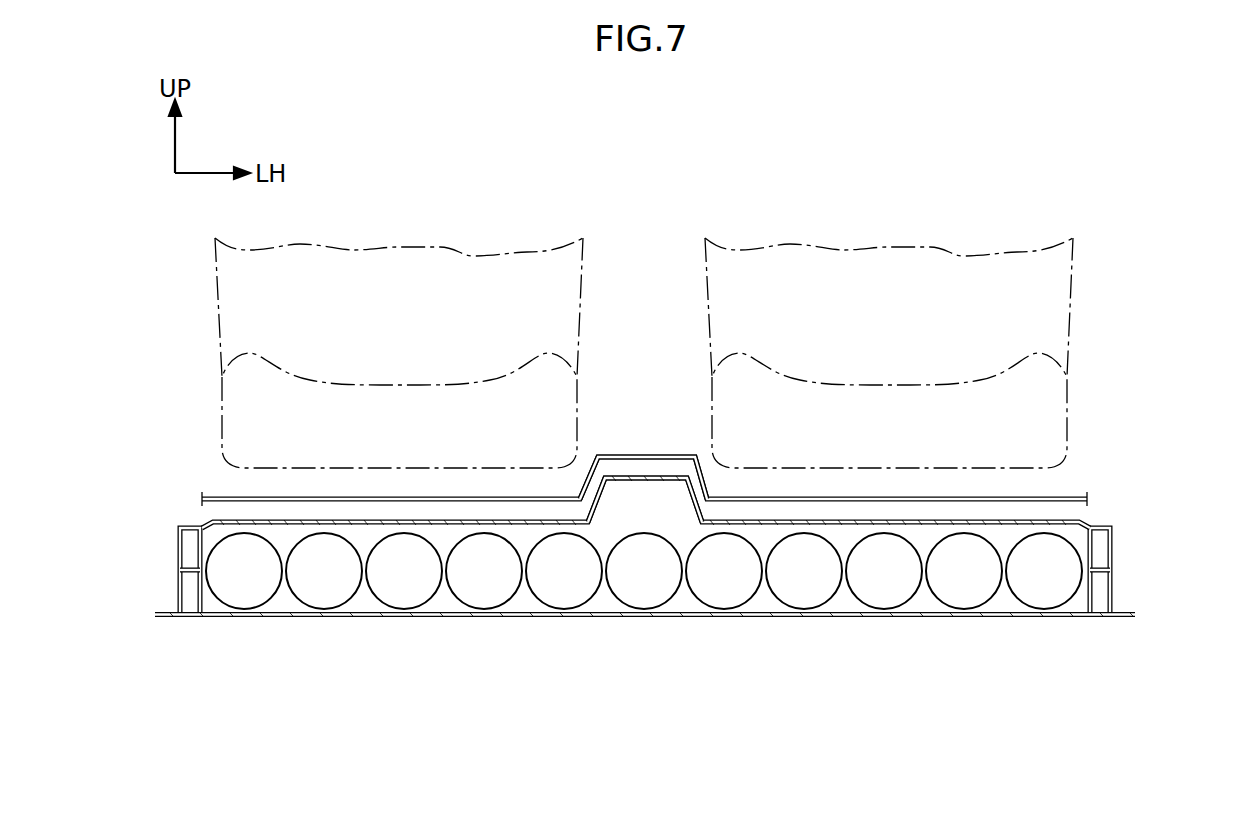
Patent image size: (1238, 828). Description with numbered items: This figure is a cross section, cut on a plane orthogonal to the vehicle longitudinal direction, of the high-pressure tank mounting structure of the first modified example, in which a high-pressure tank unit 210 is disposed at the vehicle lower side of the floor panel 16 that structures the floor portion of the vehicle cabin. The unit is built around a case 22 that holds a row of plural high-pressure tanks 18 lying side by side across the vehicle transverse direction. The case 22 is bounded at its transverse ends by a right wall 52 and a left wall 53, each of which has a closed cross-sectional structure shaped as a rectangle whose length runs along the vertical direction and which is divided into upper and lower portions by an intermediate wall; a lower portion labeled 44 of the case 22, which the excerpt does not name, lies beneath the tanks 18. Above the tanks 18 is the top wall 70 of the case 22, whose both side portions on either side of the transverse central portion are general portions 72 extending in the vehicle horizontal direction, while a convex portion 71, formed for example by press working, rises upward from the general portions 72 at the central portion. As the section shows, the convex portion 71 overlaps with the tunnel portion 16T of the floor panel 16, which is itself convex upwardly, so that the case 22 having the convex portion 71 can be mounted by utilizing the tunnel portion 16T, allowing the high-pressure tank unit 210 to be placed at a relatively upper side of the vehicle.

The floor panel 16 is at (1069, 496).
The tunnel portion 16T is at (630, 455).
The high-pressure tank 18 is at (230, 585).
The case 22 is at (1005, 622).
The lower plate 44 is at (620, 618).
The right wall 52 is at (178, 570).
The left wall 53 is at (1112, 570).
The top wall 70 is at (797, 512).
The convex portion 71 is at (663, 480).
The general portions 72 is at (402, 522).
The high-pressure tank unit 210 is at (321, 643).